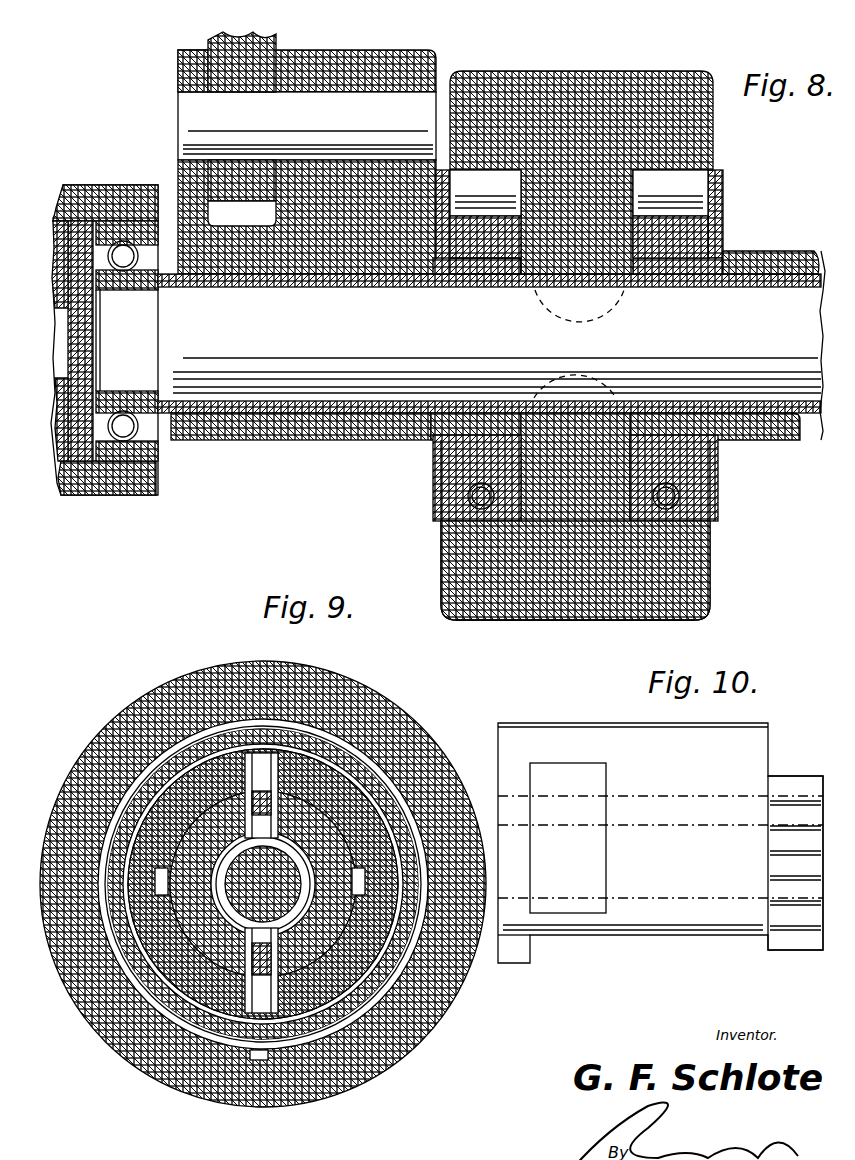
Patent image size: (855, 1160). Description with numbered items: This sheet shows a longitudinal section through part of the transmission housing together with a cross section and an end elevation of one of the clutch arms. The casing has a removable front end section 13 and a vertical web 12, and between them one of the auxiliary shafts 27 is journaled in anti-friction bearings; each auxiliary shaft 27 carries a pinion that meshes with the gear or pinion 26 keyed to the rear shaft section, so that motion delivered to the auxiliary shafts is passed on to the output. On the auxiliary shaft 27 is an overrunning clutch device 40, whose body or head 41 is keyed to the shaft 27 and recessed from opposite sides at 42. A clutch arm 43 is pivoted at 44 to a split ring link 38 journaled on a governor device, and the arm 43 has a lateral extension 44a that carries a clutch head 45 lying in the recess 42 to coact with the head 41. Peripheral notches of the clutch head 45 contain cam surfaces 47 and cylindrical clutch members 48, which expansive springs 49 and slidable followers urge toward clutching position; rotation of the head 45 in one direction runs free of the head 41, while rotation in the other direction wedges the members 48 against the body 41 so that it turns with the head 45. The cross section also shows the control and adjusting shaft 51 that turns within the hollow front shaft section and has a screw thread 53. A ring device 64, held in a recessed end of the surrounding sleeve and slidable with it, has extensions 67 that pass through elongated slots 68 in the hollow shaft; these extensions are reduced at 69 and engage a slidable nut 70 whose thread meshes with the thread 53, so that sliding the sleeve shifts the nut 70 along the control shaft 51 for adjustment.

In FIG. 10, the vertical web 12 is at (634, 968).
In FIG. 9, the front end section 13 is at (205, 655).
In FIG. 8, the gear or pinion 26 is at (113, 435).
In FIG. 8, the auxiliary shaft 27 is at (237, 380).
In FIG. 8, the ring link 38 is at (262, 36).
In FIG. 8, the overrunning clutch device 40 is at (700, 566).
In FIG. 8, the clutch body or head 41 is at (600, 610).
In FIG. 8, the recess 42 is at (490, 160).
In FIG. 8, the clutch arm 43 is at (172, 62).
In FIG. 10, the clutch arm 43 is at (735, 726).
In FIG. 8, the pivot 44 is at (355, 100).
In FIG. 8, the lateral extension 44a is at (480, 268).
In FIG. 10, the lateral extension 44a is at (800, 782).
In FIG. 8, the clutch head 45 is at (450, 260).
In FIG. 8, the cam surface 47 is at (690, 228).
In FIG. 8, the cylindrical clutch member 48 is at (477, 180).
In FIG. 8, the expansive spring 49 is at (460, 487).
In FIG. 9, the control and adjusting shaft 51 is at (447, 977).
In FIG. 9, the screw thread 53 is at (397, 1000).
In FIG. 9, the ring device 64 is at (300, 763).
In FIG. 9, the extension 67 is at (260, 790).
In FIG. 9, the elongated slot 68 is at (237, 795).
In FIG. 9, the reduced portion 69 is at (350, 787).
In FIG. 9, the slidable nut 70 is at (200, 948).